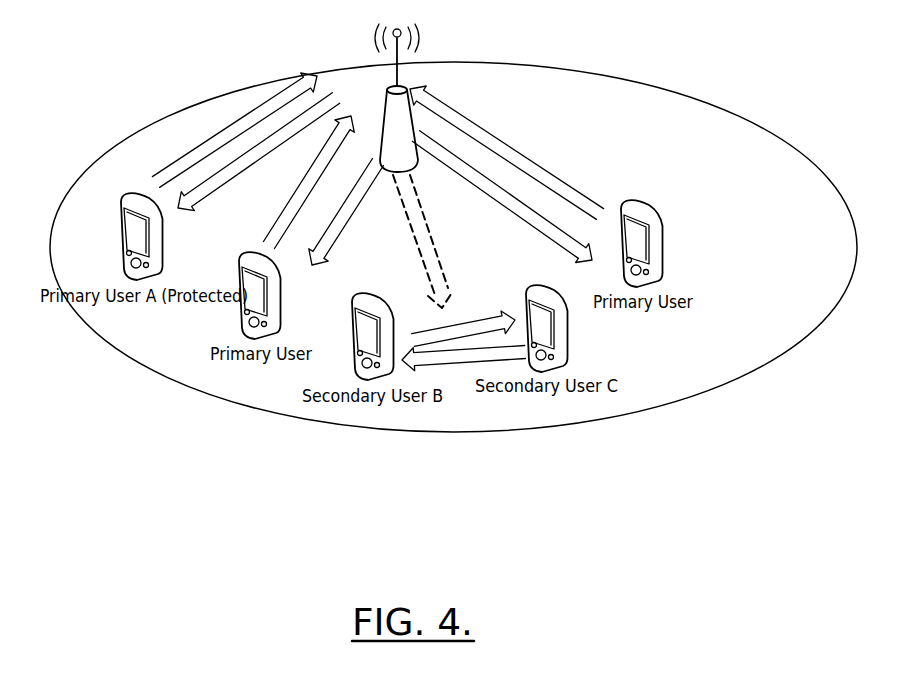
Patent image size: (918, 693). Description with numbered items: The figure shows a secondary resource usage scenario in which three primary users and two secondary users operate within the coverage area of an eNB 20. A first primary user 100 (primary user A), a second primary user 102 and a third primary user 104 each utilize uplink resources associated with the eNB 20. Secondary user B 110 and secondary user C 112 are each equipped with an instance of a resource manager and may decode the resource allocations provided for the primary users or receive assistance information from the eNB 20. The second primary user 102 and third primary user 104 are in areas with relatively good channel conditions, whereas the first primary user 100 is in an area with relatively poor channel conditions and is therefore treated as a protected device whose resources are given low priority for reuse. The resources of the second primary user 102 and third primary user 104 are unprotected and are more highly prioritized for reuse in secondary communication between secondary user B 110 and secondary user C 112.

The eNB 20 is at (357, 97).
The first primary user 100 is at (178, 236).
The second primary user 102 is at (292, 295).
The third primary user 104 is at (686, 241).
The secondary user B 110 is at (387, 316).
The secondary user C 112 is at (598, 328).